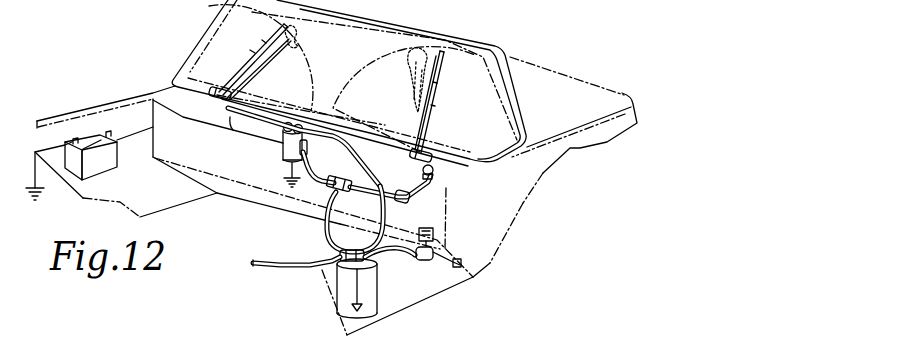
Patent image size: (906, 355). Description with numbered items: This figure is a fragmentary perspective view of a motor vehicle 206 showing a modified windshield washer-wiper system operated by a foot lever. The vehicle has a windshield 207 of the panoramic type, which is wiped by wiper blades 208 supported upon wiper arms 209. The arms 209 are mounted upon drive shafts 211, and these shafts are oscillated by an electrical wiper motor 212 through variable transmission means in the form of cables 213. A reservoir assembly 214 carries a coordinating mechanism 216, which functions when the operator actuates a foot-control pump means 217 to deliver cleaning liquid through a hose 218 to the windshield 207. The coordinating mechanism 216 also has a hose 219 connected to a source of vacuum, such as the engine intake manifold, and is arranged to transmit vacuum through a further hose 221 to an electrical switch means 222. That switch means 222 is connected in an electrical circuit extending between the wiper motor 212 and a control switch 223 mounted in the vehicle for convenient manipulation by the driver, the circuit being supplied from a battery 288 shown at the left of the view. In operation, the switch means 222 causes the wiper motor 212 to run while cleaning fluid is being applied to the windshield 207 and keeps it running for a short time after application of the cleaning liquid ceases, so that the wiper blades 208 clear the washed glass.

The motor vehicle 206 is at (526, 186).
The windshield 207 is at (357, 39).
The wiper blades 208 is at (266, 36).
The wiper arms 209 is at (242, 70).
The drive shafts 211 is at (210, 97).
The electrical wiper motor 212 is at (287, 153).
The cables 213 is at (233, 130).
The reservoir assembly 214 is at (382, 304).
The coordinating mechanism 216 is at (377, 263).
The foot-control pump means 217 is at (444, 266).
The hose 218 is at (353, 174).
The hose 219 is at (303, 265).
The hose 221 is at (322, 228).
The electrical switch means 222 is at (333, 192).
The control switch 223 is at (434, 180).
The battery 288 is at (87, 138).